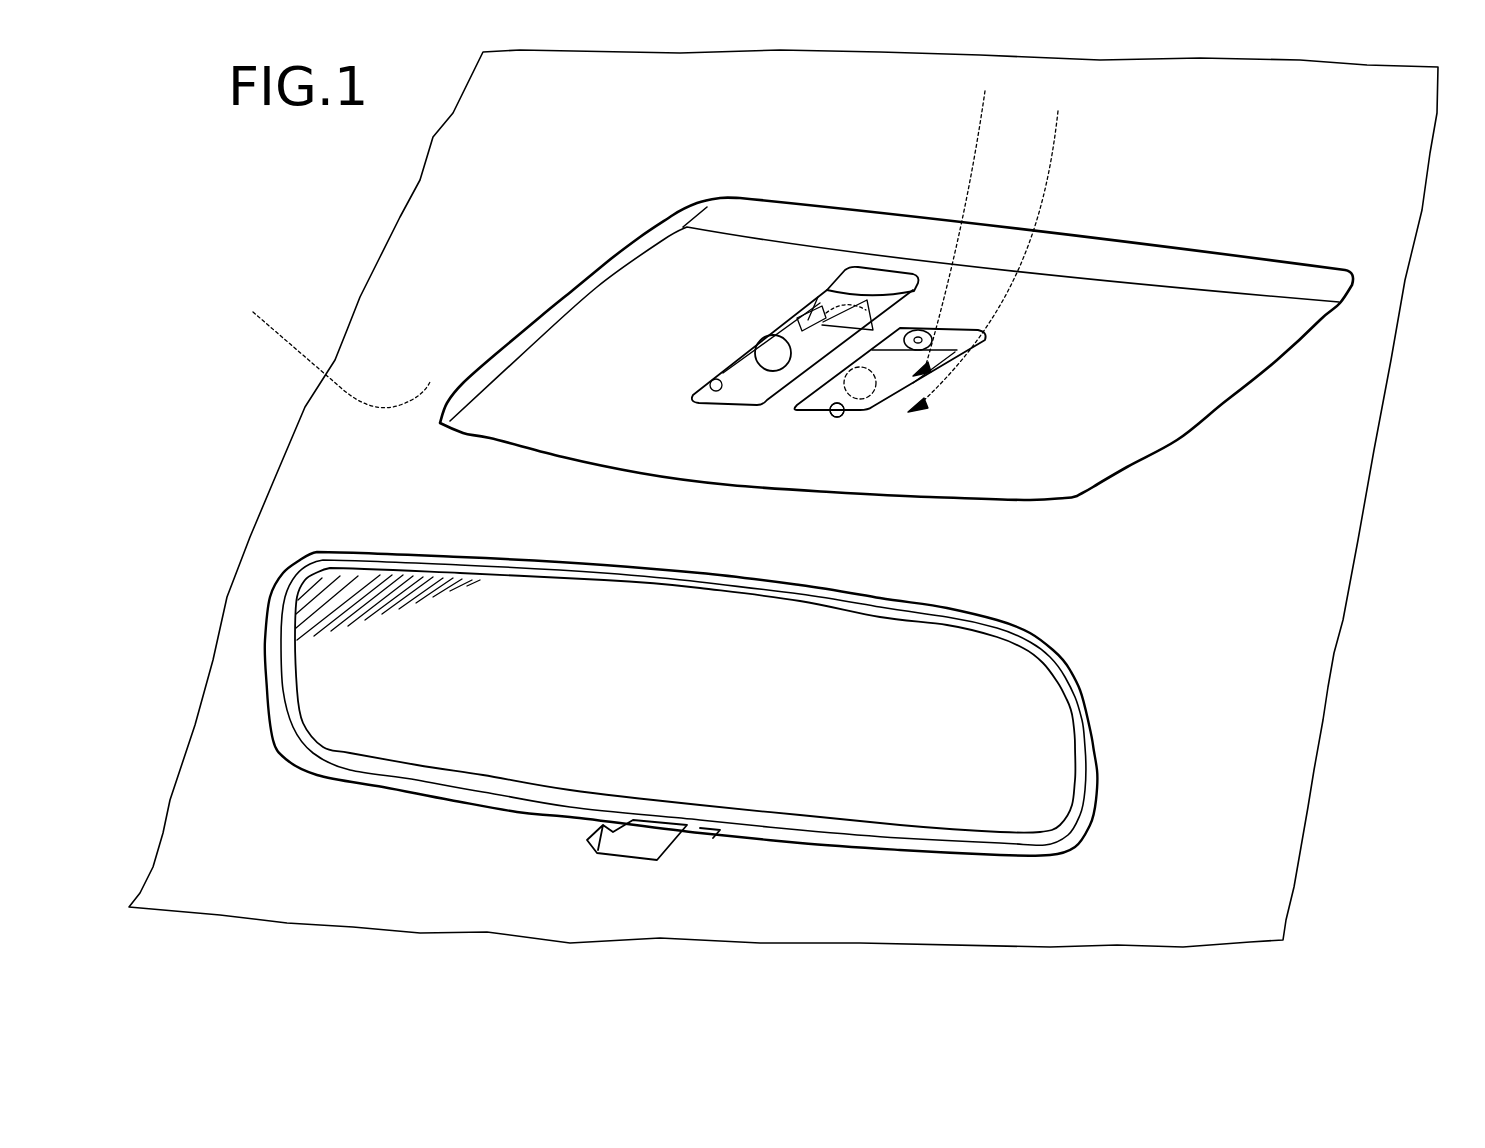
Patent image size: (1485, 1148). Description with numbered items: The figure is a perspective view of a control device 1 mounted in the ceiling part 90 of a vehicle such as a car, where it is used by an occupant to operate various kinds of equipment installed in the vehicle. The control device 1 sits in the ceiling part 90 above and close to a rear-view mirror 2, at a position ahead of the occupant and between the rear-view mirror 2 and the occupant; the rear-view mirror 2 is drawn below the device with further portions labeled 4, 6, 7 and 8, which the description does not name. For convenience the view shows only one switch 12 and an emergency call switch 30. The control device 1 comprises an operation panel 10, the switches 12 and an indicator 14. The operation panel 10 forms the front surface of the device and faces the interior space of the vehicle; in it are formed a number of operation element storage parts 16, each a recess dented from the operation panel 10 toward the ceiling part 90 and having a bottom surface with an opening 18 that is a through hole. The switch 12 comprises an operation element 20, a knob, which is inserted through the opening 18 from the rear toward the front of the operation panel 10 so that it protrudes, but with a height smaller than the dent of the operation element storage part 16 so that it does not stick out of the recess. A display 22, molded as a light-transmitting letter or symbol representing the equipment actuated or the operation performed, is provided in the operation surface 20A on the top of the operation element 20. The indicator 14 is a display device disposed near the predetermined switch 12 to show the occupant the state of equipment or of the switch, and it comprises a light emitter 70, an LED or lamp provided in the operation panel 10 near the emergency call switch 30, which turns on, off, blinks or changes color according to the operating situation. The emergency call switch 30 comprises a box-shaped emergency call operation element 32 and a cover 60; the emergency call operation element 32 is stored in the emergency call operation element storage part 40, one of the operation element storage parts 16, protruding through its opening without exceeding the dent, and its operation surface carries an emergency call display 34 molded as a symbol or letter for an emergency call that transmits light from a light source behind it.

The control device 1 is at (1253, 180).
The rear-view mirror 2 is at (1100, 730).
The mirror housing 4 is at (1093, 828).
The mirror surface edge 6 is at (1020, 807).
The mirror surface 7 is at (912, 780).
The mirror stay 8 is at (663, 842).
The operation panel 10 is at (617, 320).
The switch 12 is at (855, 292).
The indicator 14 is at (830, 420).
The light emitter 70 is at (837, 410).
The operation element storage part 16 is at (713, 379).
The opening 18 is at (778, 336).
The operation element 20 is at (875, 315).
The operation surface 20A is at (908, 330).
The display 22 is at (790, 290).
The emergency call switch 30 is at (978, 335).
The emergency call operation element 32 is at (925, 330).
The emergency call display 34 is at (863, 400).
The emergency call operation element storage part 40 is at (993, 248).
The cover 60 is at (958, 220).
The ceiling part 90 is at (331, 348).